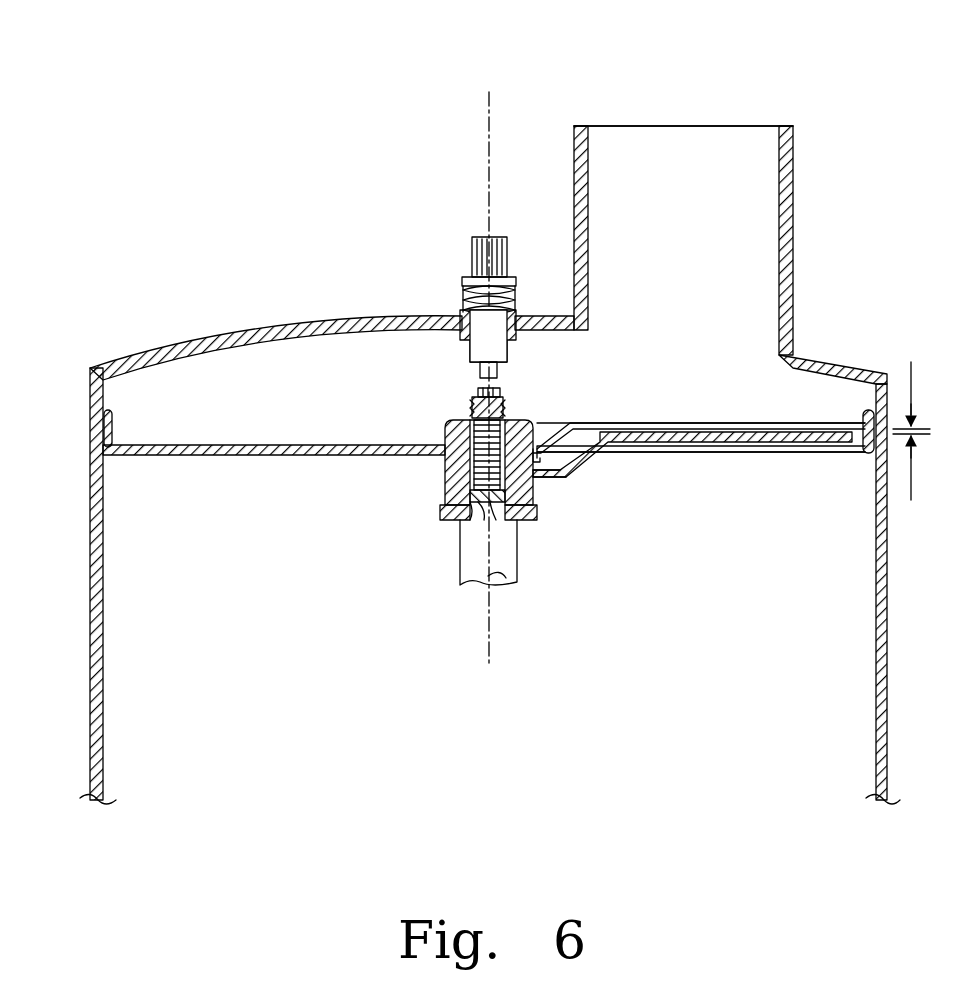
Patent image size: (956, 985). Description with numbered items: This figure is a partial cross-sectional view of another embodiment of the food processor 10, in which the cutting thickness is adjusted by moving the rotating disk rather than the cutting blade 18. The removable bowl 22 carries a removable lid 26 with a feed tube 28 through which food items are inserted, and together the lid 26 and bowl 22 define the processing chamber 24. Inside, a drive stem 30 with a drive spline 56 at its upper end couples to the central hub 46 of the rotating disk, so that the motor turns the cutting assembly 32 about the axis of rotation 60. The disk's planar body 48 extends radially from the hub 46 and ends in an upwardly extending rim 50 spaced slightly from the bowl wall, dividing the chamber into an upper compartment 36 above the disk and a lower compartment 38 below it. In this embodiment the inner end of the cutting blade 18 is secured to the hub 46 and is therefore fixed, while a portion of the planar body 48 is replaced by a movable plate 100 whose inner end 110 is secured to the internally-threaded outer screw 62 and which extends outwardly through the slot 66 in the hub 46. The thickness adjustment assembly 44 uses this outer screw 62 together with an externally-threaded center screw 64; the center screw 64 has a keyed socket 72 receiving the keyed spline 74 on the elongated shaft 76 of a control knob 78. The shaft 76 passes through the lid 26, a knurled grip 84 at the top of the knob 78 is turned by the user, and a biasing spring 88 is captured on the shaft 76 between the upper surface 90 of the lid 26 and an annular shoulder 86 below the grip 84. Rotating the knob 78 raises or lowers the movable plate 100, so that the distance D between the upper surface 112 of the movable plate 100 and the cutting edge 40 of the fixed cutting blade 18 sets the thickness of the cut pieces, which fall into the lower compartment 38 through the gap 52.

The food processor 10 is at (822, 92).
The cutting blade 18 is at (745, 426).
The removable bowl 22 is at (103, 628).
The processing chamber 24 is at (700, 624).
The removable lid 26 is at (270, 328).
The feed tube 28 is at (793, 245).
The drive stem 30 is at (518, 560).
The cutting assembly 32 is at (585, 396).
The upper compartment 36 is at (254, 387).
The lower compartment 38 is at (294, 604).
The cutting edge 40 is at (585, 425).
The thickness adjustment assembly 44 is at (527, 402).
The central hub 46 is at (533, 505).
The planar body 48 is at (355, 446).
The rim 50 is at (112, 418).
The gap 52 is at (848, 452).
The drive spline 56 is at (470, 505).
The axis of rotation 60 is at (487, 160).
The outer screw 62 is at (445, 478).
The center screw 64 is at (500, 398).
The slot 66 is at (540, 432).
The keyed socket 72 is at (478, 394).
The keyed spline 74 is at (483, 372).
The elongated shaft 76 is at (498, 361).
The control knob 78 is at (522, 238).
The knurled grip 84 is at (473, 258).
The annular shoulder 86 is at (513, 285).
The biasing spring 88 is at (465, 290).
The upper surface 90 is at (465, 307).
The movable plate 100 is at (685, 452).
The inner end 110 is at (565, 473).
The upper surface 112 is at (674, 432).
The distance D is at (910, 366).